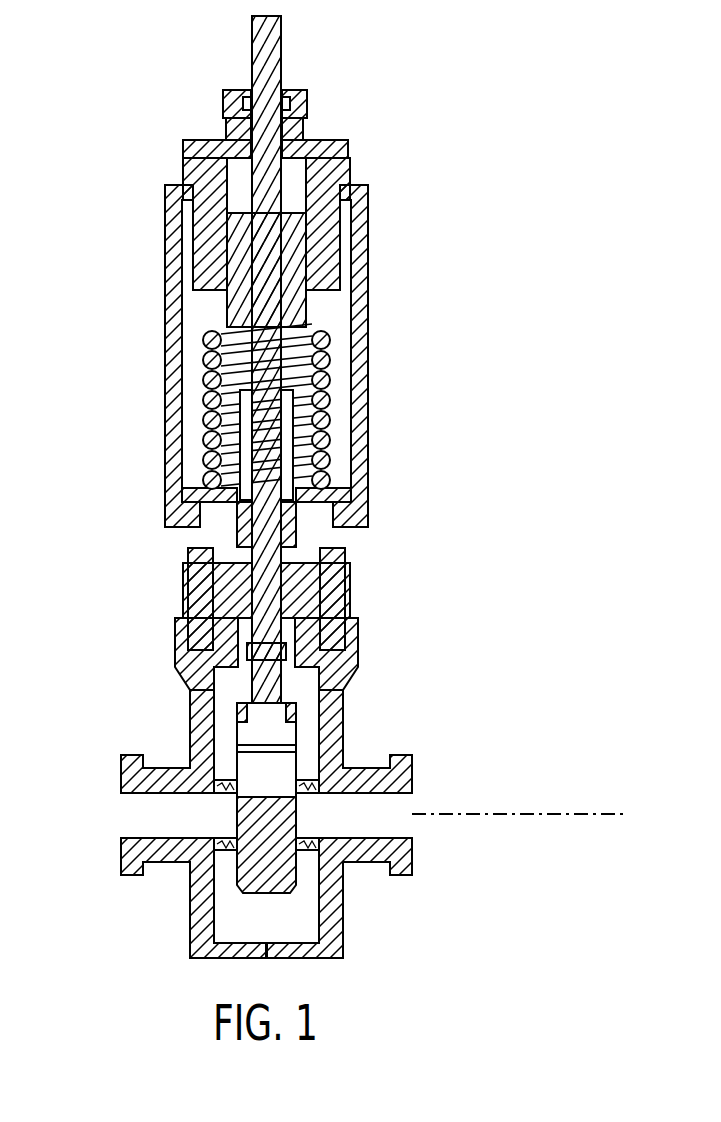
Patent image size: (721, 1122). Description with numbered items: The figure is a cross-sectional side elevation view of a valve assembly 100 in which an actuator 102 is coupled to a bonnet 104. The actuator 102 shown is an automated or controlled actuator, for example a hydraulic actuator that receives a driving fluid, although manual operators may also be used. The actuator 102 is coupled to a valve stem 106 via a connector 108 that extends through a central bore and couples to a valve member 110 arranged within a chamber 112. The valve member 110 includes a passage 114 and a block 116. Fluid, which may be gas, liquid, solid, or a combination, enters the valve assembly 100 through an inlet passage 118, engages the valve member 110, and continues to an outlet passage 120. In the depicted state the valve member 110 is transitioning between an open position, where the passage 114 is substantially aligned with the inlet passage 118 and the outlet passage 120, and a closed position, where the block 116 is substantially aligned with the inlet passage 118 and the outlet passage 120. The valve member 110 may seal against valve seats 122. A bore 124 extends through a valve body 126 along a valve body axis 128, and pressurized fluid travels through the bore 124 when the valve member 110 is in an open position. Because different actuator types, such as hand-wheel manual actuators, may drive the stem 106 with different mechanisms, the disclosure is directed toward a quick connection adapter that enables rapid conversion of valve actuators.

The valve assembly 100 is at (326, 788).
The actuator 102 is at (255, 380).
The bonnet 104 is at (366, 594).
The valve stem 106 is at (296, 522).
The connector 108 is at (270, 472).
The valve member 110 is at (229, 882).
The chamber 112 is at (308, 920).
The passage 114 is at (277, 770).
The block 116 is at (290, 880).
The inlet passage 118 is at (143, 845).
The outlet passage 120 is at (400, 821).
The valve seats 122 is at (198, 782).
The bore 124 is at (140, 797).
The valve body 126 is at (332, 720).
The valve body axis 128 is at (563, 814).